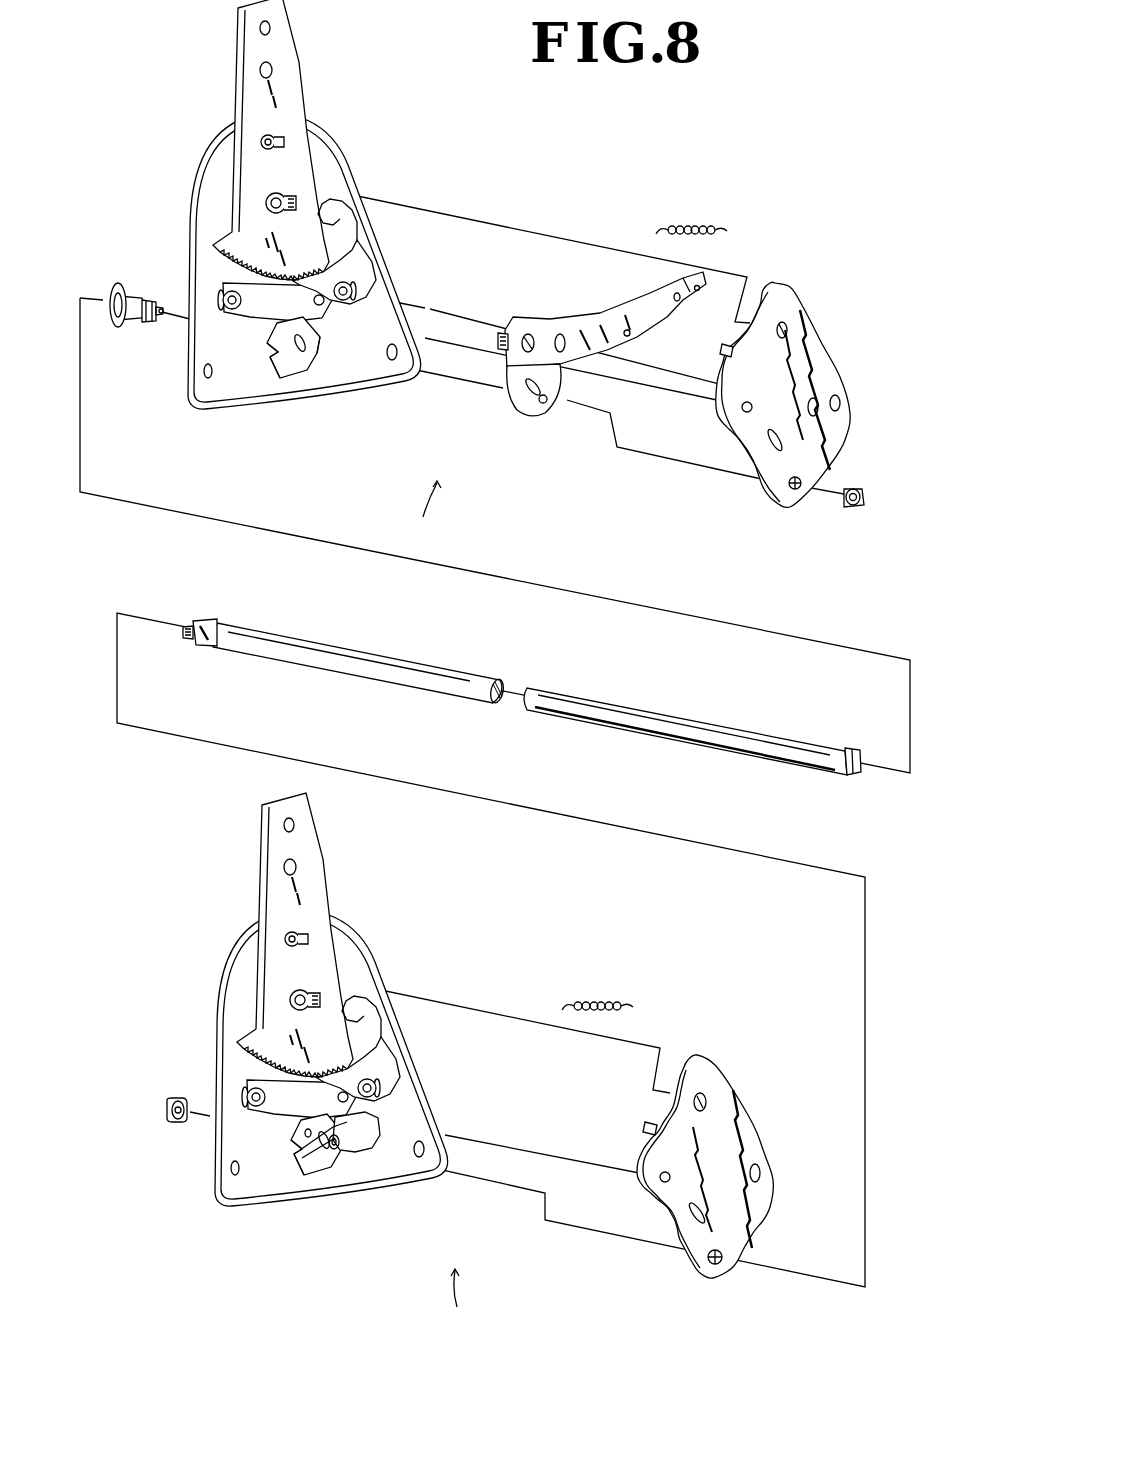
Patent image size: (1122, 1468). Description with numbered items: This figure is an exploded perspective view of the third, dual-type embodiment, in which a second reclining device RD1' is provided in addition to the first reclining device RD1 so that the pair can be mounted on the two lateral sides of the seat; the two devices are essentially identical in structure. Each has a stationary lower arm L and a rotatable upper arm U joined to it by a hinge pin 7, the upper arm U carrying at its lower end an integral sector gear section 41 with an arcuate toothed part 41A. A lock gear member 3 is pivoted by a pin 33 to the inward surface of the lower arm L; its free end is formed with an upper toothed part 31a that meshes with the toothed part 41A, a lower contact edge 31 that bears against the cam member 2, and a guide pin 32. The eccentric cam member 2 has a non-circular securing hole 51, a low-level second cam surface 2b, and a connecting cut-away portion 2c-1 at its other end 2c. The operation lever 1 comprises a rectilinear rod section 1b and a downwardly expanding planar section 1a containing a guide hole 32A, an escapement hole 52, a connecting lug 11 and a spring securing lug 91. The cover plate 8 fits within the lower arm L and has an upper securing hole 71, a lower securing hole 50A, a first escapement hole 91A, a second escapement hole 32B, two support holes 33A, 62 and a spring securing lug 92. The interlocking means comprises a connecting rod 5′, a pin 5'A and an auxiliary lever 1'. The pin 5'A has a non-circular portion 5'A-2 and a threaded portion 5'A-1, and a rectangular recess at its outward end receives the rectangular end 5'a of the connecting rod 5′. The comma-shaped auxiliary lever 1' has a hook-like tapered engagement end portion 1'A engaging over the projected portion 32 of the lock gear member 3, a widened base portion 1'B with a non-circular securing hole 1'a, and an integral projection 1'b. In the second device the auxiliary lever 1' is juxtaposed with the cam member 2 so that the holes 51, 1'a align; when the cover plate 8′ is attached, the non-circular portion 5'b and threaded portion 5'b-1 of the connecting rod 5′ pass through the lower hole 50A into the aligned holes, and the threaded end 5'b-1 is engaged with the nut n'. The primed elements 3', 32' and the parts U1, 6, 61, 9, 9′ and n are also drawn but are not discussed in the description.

The upper arm U is at (297, 60).
The upper arm bolt U1 is at (278, 140).
The lower arm L is at (193, 163).
The hinge pin 7 is at (287, 197).
The sector gear section 41 is at (240, 233).
The toothed part 41A is at (217, 253).
The lower contact edge 31 is at (293, 277).
The upper toothed part 31a is at (337, 253).
The guide pin 32 is at (375, 238).
The pawl arm 32' is at (404, 1031).
The pin 33 is at (227, 287).
The pawl pivot pin 6 is at (360, 293).
The lock gear member 3 is at (266, 369).
The link plate 3' is at (256, 1128).
The cam member 2 is at (293, 377).
The second cam surface 2b is at (320, 353).
The another end of cam member 2c is at (287, 377).
The connecting cut-away portion 2c-1 is at (280, 350).
The non-circular securing hole 51 is at (293, 360).
The pin 5'A is at (127, 331).
The threaded portion 5'A-1 is at (150, 371).
The non-circular portion 5'A-2 is at (106, 275).
The first reclining device RD1 is at (427, 515).
The second reclining device RD1' is at (457, 1304).
The spring 9 is at (690, 223).
The spring 9′ is at (597, 997).
The operation lever 1 is at (605, 315).
The downwardly expanding planar section 1a is at (550, 400).
The rectilinear rod section 1b is at (663, 297).
The connecting lug 11 is at (530, 400).
The escapement hole 52 is at (540, 405).
The spring securing lug 91 is at (510, 323).
The guide hole 32A is at (530, 337).
The hole 61 is at (563, 337).
The cover plate 8 is at (820, 330).
The cover plate 8′ is at (740, 1100).
The spring securing lug 92 is at (730, 350).
The upper securing hole 71 is at (787, 323).
The second escapement hole 32B is at (817, 397).
The support hole 62 is at (840, 403).
The support hole 33A is at (743, 407).
The first escapement hole 91A is at (763, 480).
The lower securing hole 50A is at (797, 490).
The nut n is at (867, 479).
The nut n' is at (153, 1124).
The connecting rod 5′ is at (557, 714).
The rectangular end 5'a is at (864, 735).
The non-circular portion 5'b is at (231, 606).
The threaded portion 5'b-1 is at (179, 600).
The auxiliary lever 1' is at (368, 1181).
The hook-like tapered engagement end portion 1'A is at (408, 1120).
The non-circular securing hole 1'a is at (364, 1192).
The integral projection 1'b is at (279, 1147).
The widened base portion 1'B is at (259, 1197).